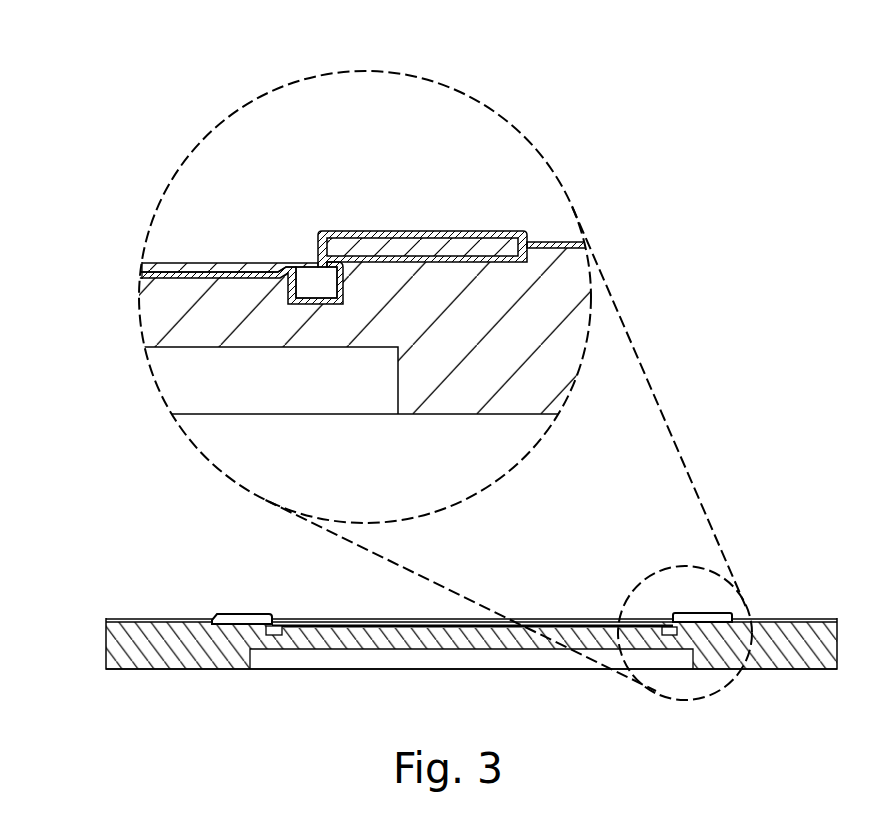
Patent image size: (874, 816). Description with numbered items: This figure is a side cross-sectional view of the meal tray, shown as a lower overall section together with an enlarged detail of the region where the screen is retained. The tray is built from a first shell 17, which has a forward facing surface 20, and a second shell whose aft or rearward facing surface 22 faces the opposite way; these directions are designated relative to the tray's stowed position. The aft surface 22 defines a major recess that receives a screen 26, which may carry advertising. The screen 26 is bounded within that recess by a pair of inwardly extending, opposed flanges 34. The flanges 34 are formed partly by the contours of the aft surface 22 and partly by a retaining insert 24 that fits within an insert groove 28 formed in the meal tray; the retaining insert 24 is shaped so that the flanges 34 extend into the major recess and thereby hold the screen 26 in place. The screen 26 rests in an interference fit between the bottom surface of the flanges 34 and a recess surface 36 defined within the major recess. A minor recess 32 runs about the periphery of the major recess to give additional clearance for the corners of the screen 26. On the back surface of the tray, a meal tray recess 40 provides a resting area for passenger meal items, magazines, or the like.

The first shell 17 is at (448, 400).
The forward facing surface 20 is at (497, 415).
The aft facing surface 22 is at (372, 229).
The retaining insert 24 is at (445, 237).
The screen 26 is at (216, 263).
The insert groove 28 is at (536, 238).
The minor recess 32 is at (308, 284).
The flanges 34 is at (318, 252).
The recess surface 36 is at (168, 263).
The meal tray recess 40 is at (207, 385).